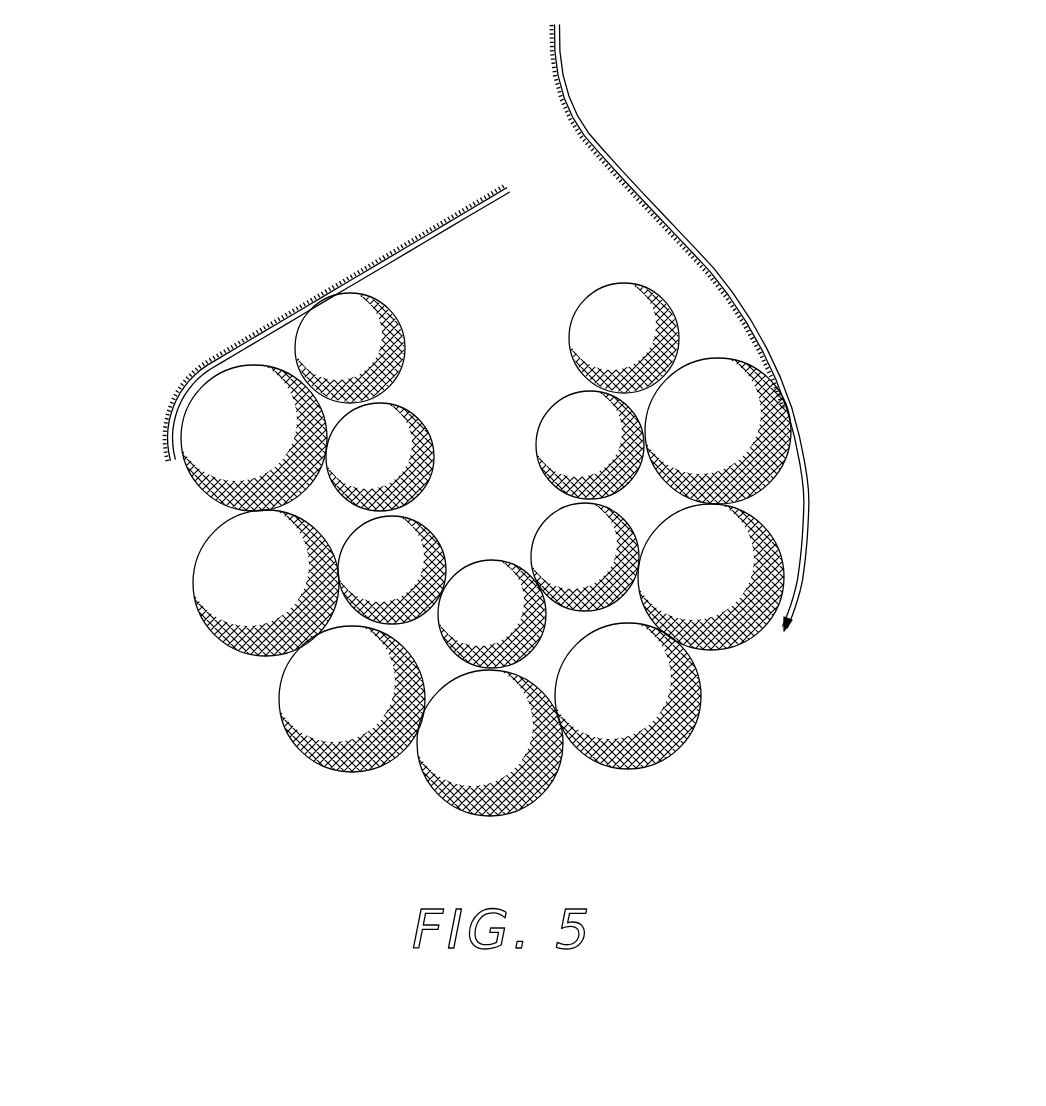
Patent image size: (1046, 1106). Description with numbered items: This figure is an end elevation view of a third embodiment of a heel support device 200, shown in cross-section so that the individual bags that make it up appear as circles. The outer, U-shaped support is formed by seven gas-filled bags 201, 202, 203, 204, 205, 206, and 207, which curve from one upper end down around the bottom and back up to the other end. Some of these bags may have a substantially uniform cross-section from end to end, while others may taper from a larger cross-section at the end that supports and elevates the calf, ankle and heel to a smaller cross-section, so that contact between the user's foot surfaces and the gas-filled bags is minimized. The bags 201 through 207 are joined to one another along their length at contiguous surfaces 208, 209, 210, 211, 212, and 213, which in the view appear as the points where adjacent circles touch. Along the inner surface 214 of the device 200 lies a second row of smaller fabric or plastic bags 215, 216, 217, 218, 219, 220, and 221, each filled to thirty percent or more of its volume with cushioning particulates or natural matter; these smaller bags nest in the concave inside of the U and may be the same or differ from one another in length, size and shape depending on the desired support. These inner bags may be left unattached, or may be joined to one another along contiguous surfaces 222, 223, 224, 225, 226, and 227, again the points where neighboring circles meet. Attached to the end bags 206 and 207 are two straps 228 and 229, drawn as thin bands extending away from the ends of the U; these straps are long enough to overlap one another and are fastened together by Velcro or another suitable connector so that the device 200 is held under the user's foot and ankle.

The support device 200 is at (580, 798).
The gas-filled bag 201 is at (237, 463).
The gas-filled bag 202 is at (270, 590).
The gas-filled bag 203 is at (335, 690).
The gas-filled bag 204 is at (462, 813).
The gas-filled bag 205 is at (653, 723).
The gas-filled bag 206 is at (763, 630).
The gas-filled bag 207 is at (747, 438).
The contiguous surface 208 is at (243, 510).
The contiguous surface 209 is at (278, 662).
The contiguous surface 210 is at (413, 753).
The contiguous surface 211 is at (572, 745).
The contiguous surface 212 is at (690, 650).
The contiguous surface 213 is at (737, 506).
The inner surface 214 is at (695, 355).
The fabric or plastic bag 215 is at (345, 318).
The fabric or plastic bag 216 is at (378, 430).
The fabric or plastic bag 217 is at (402, 545).
The fabric or plastic bag 218 is at (524, 623).
The fabric or plastic bag 219 is at (570, 522).
The fabric or plastic bag 220 is at (590, 413).
The fabric or plastic bag 221 is at (637, 318).
The contiguous surface 222 is at (382, 398).
The contiguous surface 223 is at (363, 512).
The contiguous surface 224 is at (447, 577).
The contiguous surface 225 is at (547, 603).
The contiguous surface 226 is at (606, 500).
The contiguous surface 227 is at (590, 388).
The strap 228 is at (180, 413).
The strap 229 is at (585, 123).